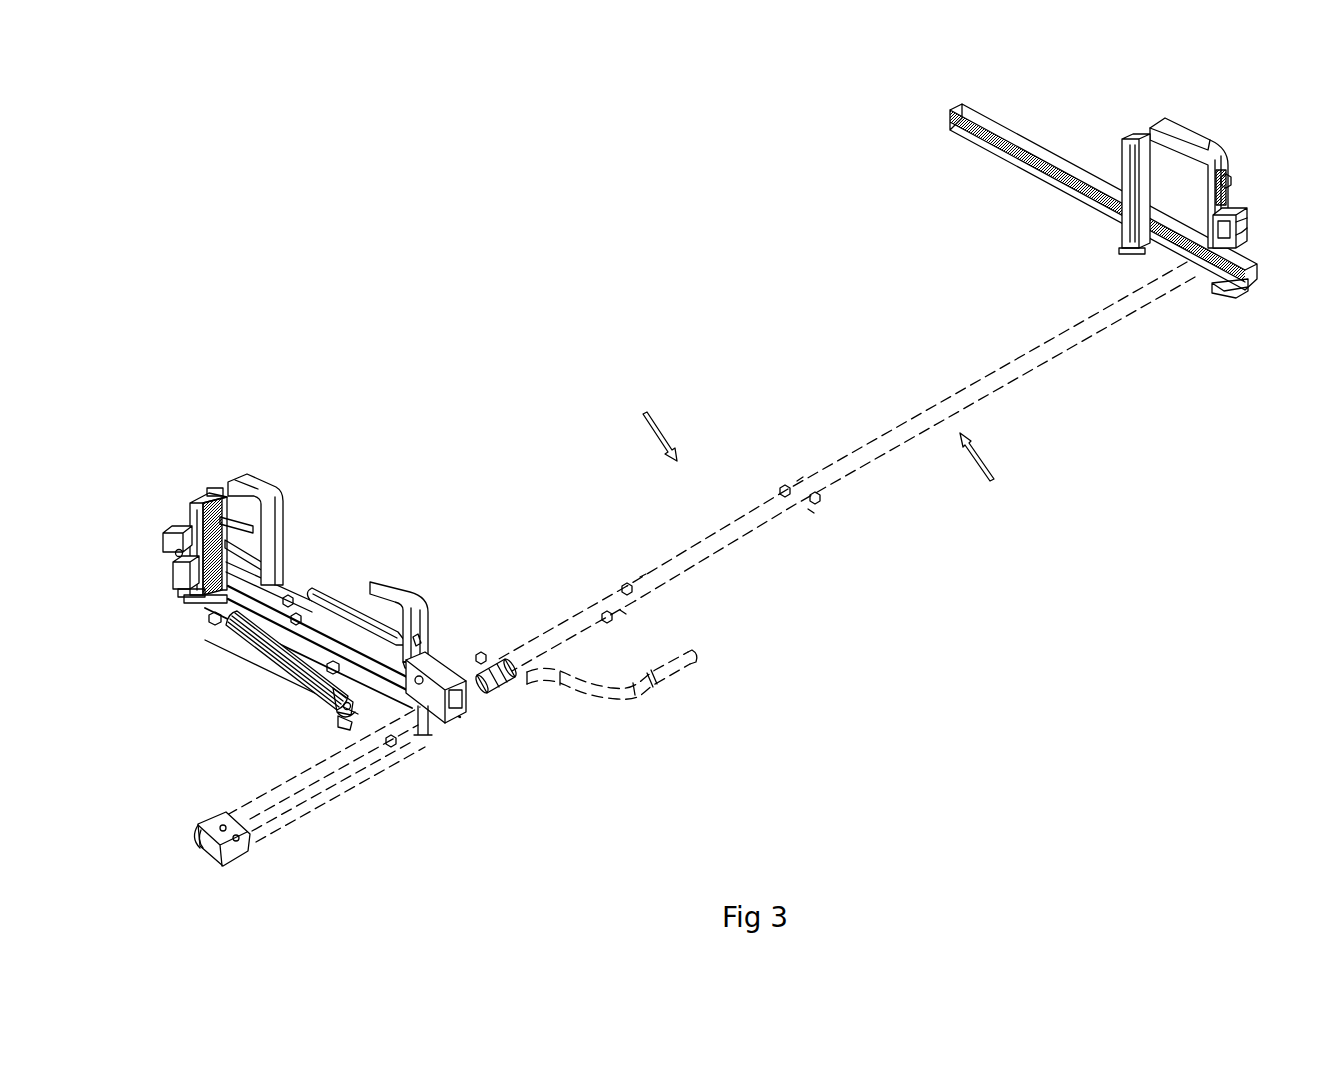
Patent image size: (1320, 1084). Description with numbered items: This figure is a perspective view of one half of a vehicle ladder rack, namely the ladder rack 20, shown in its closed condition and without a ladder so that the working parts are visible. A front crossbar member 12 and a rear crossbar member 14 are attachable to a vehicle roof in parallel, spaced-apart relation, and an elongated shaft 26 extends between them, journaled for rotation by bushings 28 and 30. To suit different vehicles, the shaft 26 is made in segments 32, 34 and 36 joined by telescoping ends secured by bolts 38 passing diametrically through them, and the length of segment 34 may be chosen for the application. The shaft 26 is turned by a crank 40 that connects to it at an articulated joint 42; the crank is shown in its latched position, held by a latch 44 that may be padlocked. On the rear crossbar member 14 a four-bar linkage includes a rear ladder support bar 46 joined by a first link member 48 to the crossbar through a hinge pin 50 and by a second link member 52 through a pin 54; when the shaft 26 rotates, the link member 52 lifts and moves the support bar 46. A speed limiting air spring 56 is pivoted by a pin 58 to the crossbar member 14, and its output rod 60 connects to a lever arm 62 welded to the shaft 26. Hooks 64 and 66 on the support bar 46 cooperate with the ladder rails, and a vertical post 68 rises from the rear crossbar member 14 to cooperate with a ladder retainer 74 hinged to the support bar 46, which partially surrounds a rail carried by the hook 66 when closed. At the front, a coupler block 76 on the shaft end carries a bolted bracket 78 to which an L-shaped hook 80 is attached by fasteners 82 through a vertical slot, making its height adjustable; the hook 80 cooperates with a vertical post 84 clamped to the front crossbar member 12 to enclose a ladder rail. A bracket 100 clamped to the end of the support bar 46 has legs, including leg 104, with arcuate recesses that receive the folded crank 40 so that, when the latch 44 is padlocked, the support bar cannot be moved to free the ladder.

The front crossbar member 12 is at (1006, 124).
The rear crossbar member 14 is at (170, 580).
The ladder rack 20 is at (650, 421).
The elongated shaft 26 is at (985, 473).
The bushing 28 is at (427, 735).
The bushing 30 is at (1192, 276).
The shaft segment 32 is at (1030, 348).
The shaft segment 34 is at (715, 528).
The shaft segment 36 is at (528, 642).
The bolts 38 is at (784, 484).
The crank 40 is at (612, 700).
The articulated joint 42 is at (213, 862).
The latch 44 is at (516, 690).
The rear ladder support bar 46 is at (323, 608).
The first link member 48 is at (250, 553).
The hinge pin 50 is at (300, 672).
The second link member 52 is at (348, 602).
The pin 54 is at (300, 628).
The speed limiting air spring 56 is at (300, 700).
The pin 58 is at (208, 621).
The output rod 60 is at (345, 726).
The lever arm 62 is at (388, 747).
The hook 64 is at (412, 580).
The hook 66 is at (278, 478).
The vertical post 68 is at (185, 524).
The ladder retainer 74 is at (210, 488).
The coupler block 76 is at (1248, 211).
The bracket 78 is at (1229, 162).
The L-shaped hook 80 is at (1190, 124).
The fasteners 82 is at (1232, 178).
The vertical post 84 is at (1120, 155).
The bracket 100 is at (463, 703).
The leg 104 is at (437, 740).